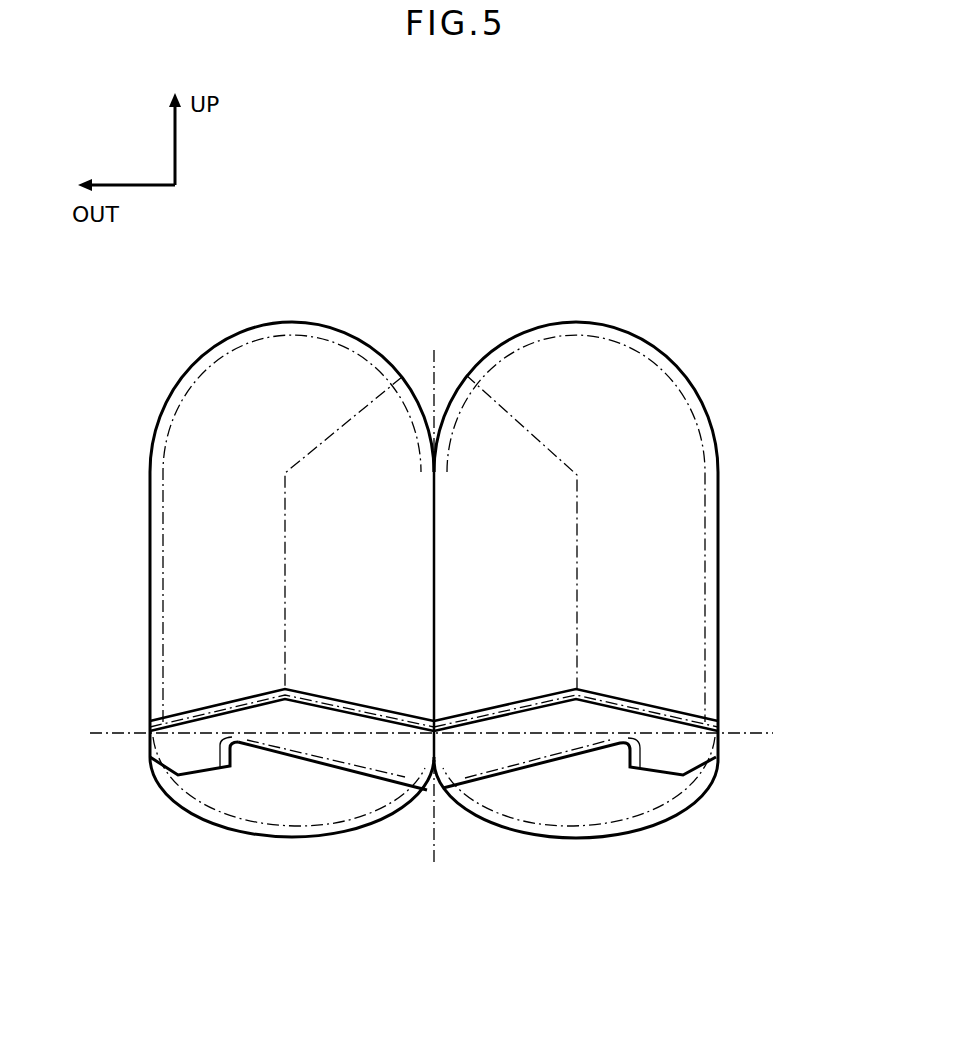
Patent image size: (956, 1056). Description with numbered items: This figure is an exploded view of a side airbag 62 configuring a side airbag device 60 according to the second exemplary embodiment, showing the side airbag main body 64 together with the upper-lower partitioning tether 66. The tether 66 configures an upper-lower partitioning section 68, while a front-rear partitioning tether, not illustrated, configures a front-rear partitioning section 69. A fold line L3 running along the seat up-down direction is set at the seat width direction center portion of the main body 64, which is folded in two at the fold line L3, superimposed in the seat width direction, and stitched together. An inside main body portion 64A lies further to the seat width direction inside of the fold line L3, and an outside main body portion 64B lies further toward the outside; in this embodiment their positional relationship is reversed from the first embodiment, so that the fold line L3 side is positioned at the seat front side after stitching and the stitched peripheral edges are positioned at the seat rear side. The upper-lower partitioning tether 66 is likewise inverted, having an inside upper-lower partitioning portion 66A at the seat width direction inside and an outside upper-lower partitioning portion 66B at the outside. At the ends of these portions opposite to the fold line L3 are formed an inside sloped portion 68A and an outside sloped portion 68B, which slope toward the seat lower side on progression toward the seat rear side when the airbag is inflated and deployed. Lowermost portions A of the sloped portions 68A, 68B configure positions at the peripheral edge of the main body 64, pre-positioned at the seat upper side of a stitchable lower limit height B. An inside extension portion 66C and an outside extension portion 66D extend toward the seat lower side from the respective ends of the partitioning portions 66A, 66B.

The side airbag device 60 is at (366, 259).
The side airbag 62 is at (388, 945).
The side airbag main body 64 is at (258, 840).
The inside main body portion 64A is at (602, 365).
The outside main body portion 64B is at (248, 365).
The upper-lower partitioning tether 66 is at (334, 780).
The inside upper-lower partitioning portion 66A is at (486, 757).
The outside upper-lower partitioning portion 66B is at (380, 763).
The inside extension portion 66C is at (653, 773).
The outside extension portion 66D is at (210, 772).
The upper-lower partitioning section 68 is at (434, 654).
The inside sloped portion 68A is at (622, 702).
The outside sloped portion 68B is at (225, 700).
The front-rear partitioning section 69 is at (545, 447).
The fold line L3 is at (437, 360).
The lowermost portion A is at (150, 727).
The stitchable lower limit height B is at (765, 733).